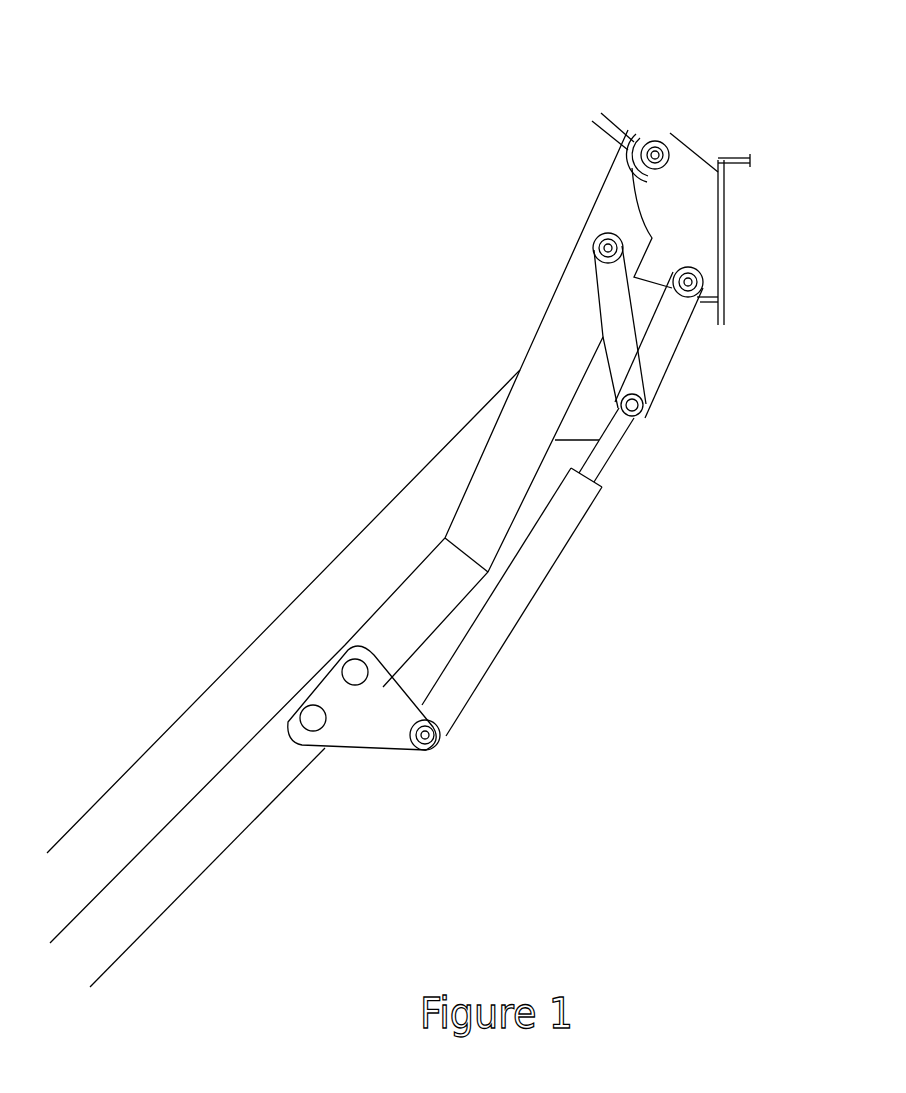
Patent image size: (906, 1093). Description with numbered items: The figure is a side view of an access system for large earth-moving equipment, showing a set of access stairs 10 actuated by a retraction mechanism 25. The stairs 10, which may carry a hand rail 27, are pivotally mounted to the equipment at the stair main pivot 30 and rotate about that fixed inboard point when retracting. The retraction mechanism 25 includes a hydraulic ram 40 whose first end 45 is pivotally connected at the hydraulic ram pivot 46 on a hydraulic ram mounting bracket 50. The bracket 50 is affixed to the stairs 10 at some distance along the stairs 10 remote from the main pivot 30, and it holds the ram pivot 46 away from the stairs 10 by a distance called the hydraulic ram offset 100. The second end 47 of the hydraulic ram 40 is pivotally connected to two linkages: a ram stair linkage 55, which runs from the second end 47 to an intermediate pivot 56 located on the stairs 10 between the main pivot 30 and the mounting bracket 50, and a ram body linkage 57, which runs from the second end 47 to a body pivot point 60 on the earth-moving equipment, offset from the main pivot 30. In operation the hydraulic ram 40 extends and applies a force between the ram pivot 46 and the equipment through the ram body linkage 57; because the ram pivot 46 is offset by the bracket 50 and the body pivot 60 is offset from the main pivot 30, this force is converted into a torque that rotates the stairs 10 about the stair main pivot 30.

The stairs 10 is at (172, 903).
The hydraulic ram offset 100 is at (431, 656).
The retraction mechanism 25 is at (733, 599).
The hand rail 27 is at (615, 117).
The stair main pivot 30 is at (648, 150).
The hydraulic ram 40 is at (575, 530).
The first end of the hydraulic ram 45 is at (485, 677).
The hydraulic ram pivot 46 is at (445, 747).
The second end of the hydraulic ram 47 is at (642, 412).
The hydraulic ram mounting bracket 50 is at (377, 752).
The ram stair linkage 55 is at (598, 313).
The intermediate pivot 56 is at (598, 238).
The ram body linkage 57 is at (672, 355).
The body pivot point 60 is at (700, 280).